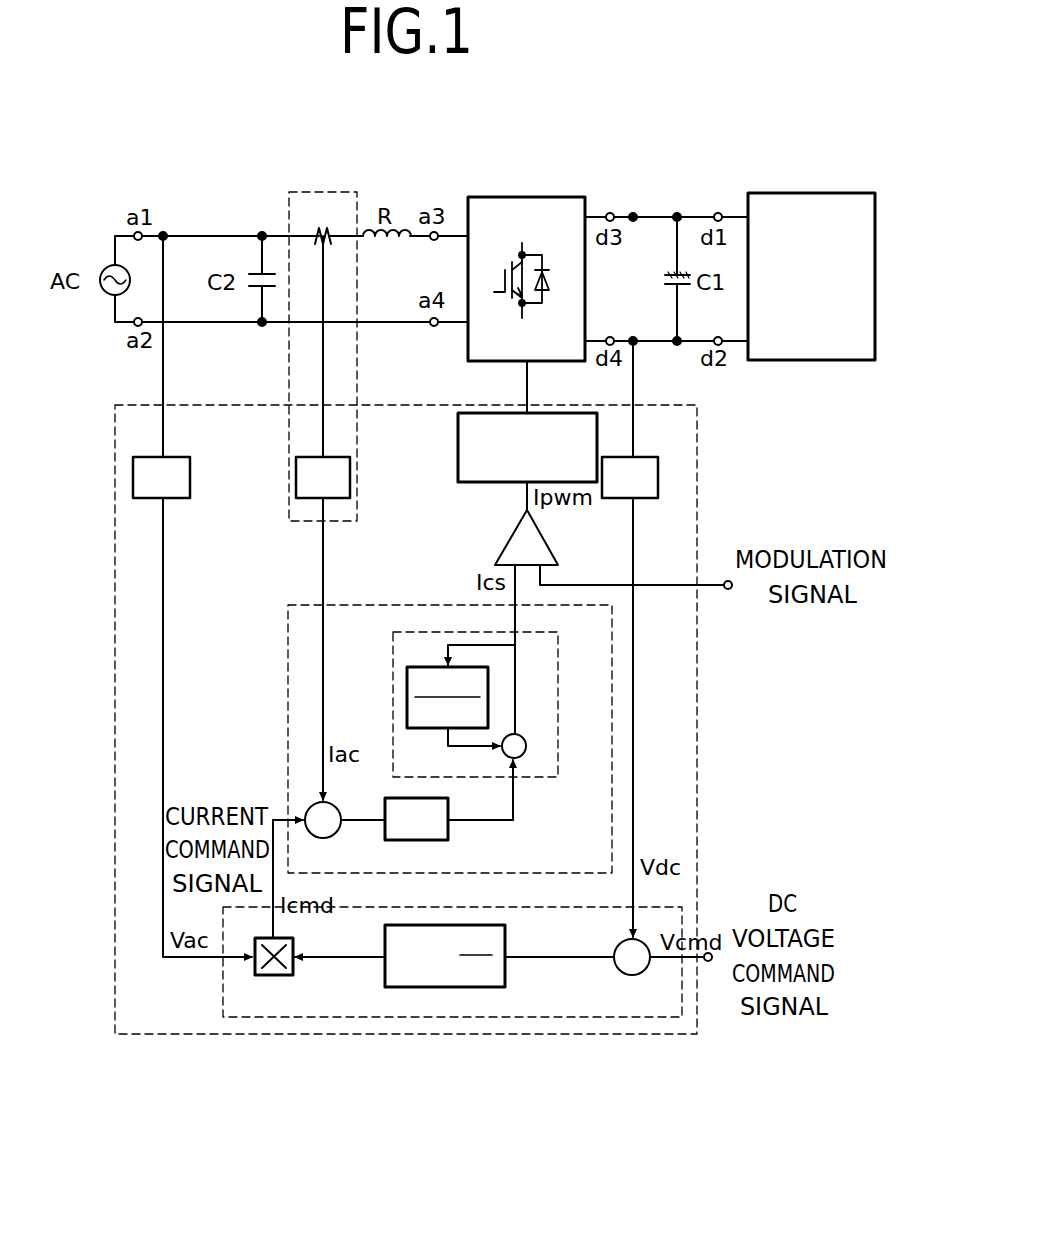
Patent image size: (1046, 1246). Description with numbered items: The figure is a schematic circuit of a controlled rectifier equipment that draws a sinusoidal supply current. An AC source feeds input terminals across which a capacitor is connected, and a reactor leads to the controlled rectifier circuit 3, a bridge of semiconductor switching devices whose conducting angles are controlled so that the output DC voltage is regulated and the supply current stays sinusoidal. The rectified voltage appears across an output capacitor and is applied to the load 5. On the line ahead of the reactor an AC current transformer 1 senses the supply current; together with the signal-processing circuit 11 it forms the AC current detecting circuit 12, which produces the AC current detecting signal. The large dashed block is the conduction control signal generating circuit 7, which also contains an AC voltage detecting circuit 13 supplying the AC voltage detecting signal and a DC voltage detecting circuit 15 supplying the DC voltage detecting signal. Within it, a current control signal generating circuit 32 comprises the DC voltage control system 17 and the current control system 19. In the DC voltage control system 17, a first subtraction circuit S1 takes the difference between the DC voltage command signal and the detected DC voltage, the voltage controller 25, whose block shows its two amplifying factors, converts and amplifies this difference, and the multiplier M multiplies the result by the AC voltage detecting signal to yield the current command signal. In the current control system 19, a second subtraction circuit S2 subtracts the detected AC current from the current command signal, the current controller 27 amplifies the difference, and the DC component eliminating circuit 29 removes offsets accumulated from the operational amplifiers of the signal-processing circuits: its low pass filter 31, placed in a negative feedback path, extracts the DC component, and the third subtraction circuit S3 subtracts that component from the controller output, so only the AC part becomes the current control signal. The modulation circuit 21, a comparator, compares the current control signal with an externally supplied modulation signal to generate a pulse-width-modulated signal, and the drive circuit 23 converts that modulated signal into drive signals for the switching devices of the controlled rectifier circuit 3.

The AC current transformer 1 is at (330, 200).
The controlled rectifier circuit 3 is at (585, 197).
The load 5 is at (815, 193).
The conduction control signal generating circuit 7 is at (697, 533).
The signal-processing circuit 11 is at (345, 457).
The AC current detecting circuit 12 is at (357, 360).
The AC voltage detecting circuit 13 is at (178, 457).
The DC voltage detecting circuit 15 is at (645, 457).
The DC voltage control system 17 is at (535, 1017).
The current control system 19 is at (612, 803).
The modulation circuit 21 is at (495, 535).
The drive circuit 23 is at (458, 460).
The voltage controller 25 is at (440, 987).
The current controller 27 is at (448, 830).
The DC component eliminating circuit 29 is at (535, 785).
The low pass filter 31 is at (488, 692).
The current control signal generating circuit 32 is at (650, 721).
The multiplier M is at (270, 975).
The first subtraction circuit S1 is at (630, 975).
The second subtraction circuit S2 is at (323, 838).
The third subtraction circuit S3 is at (526, 746).